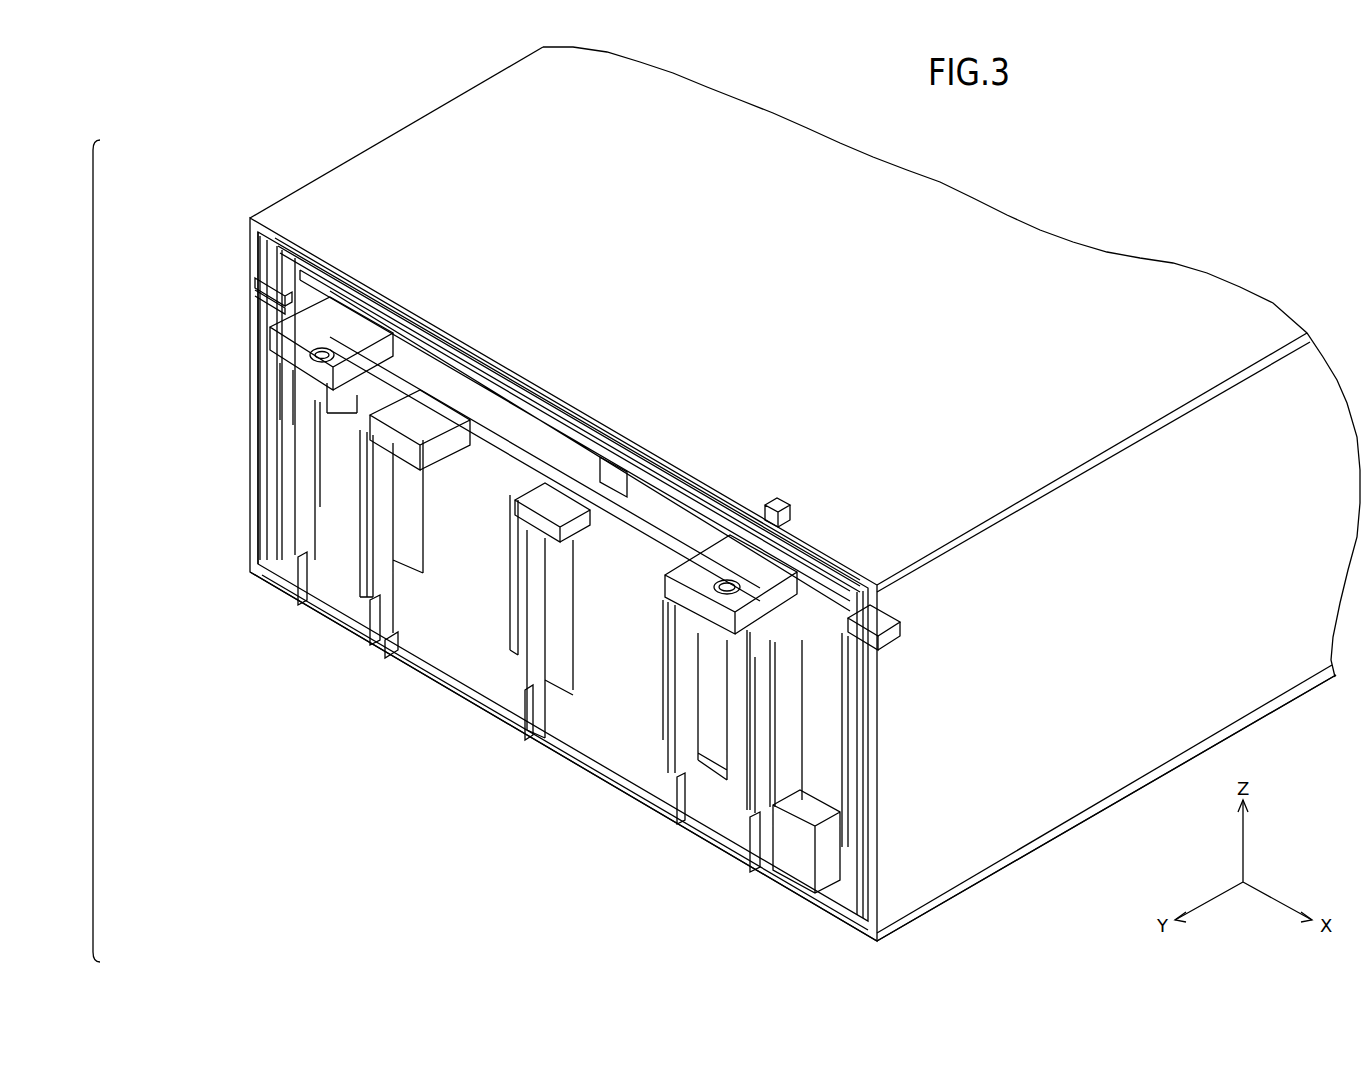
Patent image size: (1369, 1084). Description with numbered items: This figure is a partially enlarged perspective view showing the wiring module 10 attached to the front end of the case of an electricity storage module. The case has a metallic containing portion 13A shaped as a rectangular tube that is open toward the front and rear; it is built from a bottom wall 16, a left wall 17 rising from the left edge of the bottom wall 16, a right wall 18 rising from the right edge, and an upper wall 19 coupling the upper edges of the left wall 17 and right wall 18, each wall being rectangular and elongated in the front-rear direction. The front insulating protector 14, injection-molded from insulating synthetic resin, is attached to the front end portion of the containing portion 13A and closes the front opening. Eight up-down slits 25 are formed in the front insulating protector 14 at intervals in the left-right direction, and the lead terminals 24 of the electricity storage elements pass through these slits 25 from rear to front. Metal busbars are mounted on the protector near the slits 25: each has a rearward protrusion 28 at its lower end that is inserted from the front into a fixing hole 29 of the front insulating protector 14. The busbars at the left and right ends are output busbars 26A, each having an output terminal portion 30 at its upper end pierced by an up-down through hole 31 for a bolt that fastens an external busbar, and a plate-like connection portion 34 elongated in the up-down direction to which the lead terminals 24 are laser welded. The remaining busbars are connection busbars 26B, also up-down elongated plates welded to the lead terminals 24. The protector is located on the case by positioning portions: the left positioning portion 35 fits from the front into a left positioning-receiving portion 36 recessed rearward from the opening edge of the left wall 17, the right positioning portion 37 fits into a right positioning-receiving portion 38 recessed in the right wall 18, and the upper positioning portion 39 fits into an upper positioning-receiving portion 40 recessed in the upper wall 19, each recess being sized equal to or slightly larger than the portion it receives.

The wiring module 10 is at (528, 405).
The containing portion 13A is at (93, 570).
The front insulating protector 14 is at (492, 425).
The bottom wall 16 is at (280, 590).
The left wall 17 is at (897, 893).
The right wall 18 is at (255, 527).
The upper wall 19 is at (290, 202).
The lead terminal 24 is at (420, 510).
The slit 25 is at (395, 568).
The output busbar 26A is at (198, 348).
The connection busbar 26B is at (370, 637).
The protrusion 28 is at (395, 640).
The fixing hole 29 is at (378, 645).
The output terminal portion 30 is at (302, 356).
The through hole 31 is at (330, 352).
The connection portion 34 is at (307, 442).
The left positioning portion 35 is at (885, 640).
The left positioning-receiving portion 36 is at (890, 627).
The right positioning portion 37 is at (262, 280).
The right positioning-receiving portion 38 is at (262, 290).
The upper positioning portion 39 is at (766, 508).
The upper positioning-receiving portion 40 is at (780, 508).